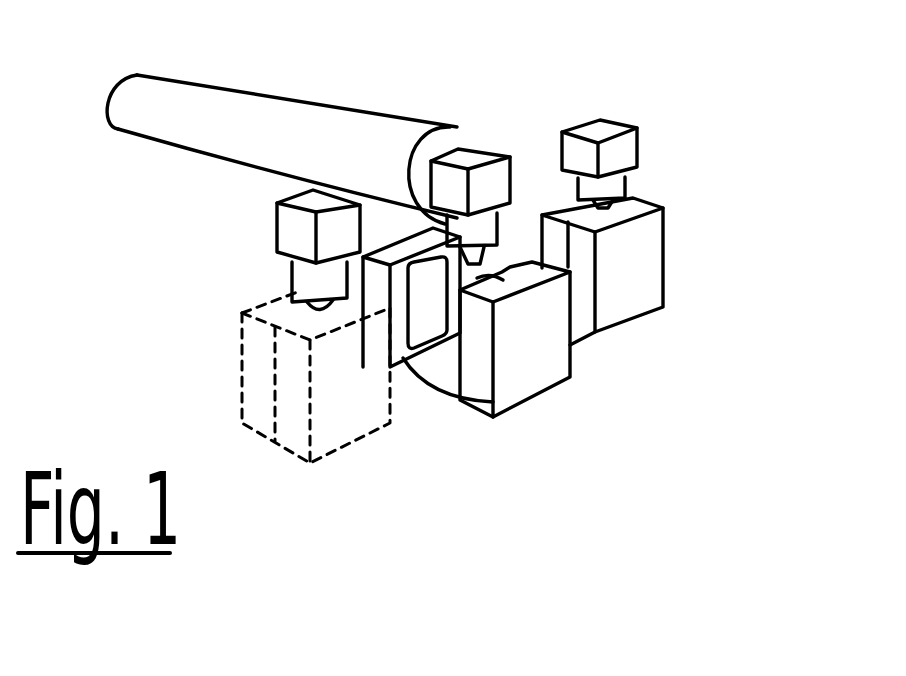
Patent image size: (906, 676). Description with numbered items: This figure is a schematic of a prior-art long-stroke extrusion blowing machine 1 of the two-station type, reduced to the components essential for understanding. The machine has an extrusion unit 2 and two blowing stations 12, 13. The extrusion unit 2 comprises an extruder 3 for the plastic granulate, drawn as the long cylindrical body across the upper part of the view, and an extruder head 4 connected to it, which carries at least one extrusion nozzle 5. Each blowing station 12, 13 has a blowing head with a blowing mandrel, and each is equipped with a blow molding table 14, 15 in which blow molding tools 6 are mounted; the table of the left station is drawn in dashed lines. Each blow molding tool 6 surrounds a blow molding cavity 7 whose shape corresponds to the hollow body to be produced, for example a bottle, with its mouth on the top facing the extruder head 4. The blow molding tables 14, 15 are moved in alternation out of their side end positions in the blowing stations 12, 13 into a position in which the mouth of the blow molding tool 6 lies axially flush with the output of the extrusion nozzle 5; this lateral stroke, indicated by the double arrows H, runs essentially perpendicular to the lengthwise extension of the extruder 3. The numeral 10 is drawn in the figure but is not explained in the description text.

The extrusion blowing machine 1 is at (138, 241).
The extrusion unit 2 is at (489, 114).
The extruder 3 is at (283, 98).
The extruder head 4 is at (468, 160).
The extrusion nozzle 5 is at (470, 264).
The blow molding tool 6 is at (524, 363).
The blow molding cavity 7 is at (427, 293).
The left nozzle unit 10 is at (426, 257).
The blowing station 12 is at (288, 230).
The blowing station 13 is at (630, 146).
The blow molding table 14 is at (383, 289).
The blow molding table 15 is at (652, 232).
The stroke direction H is at (592, 355).